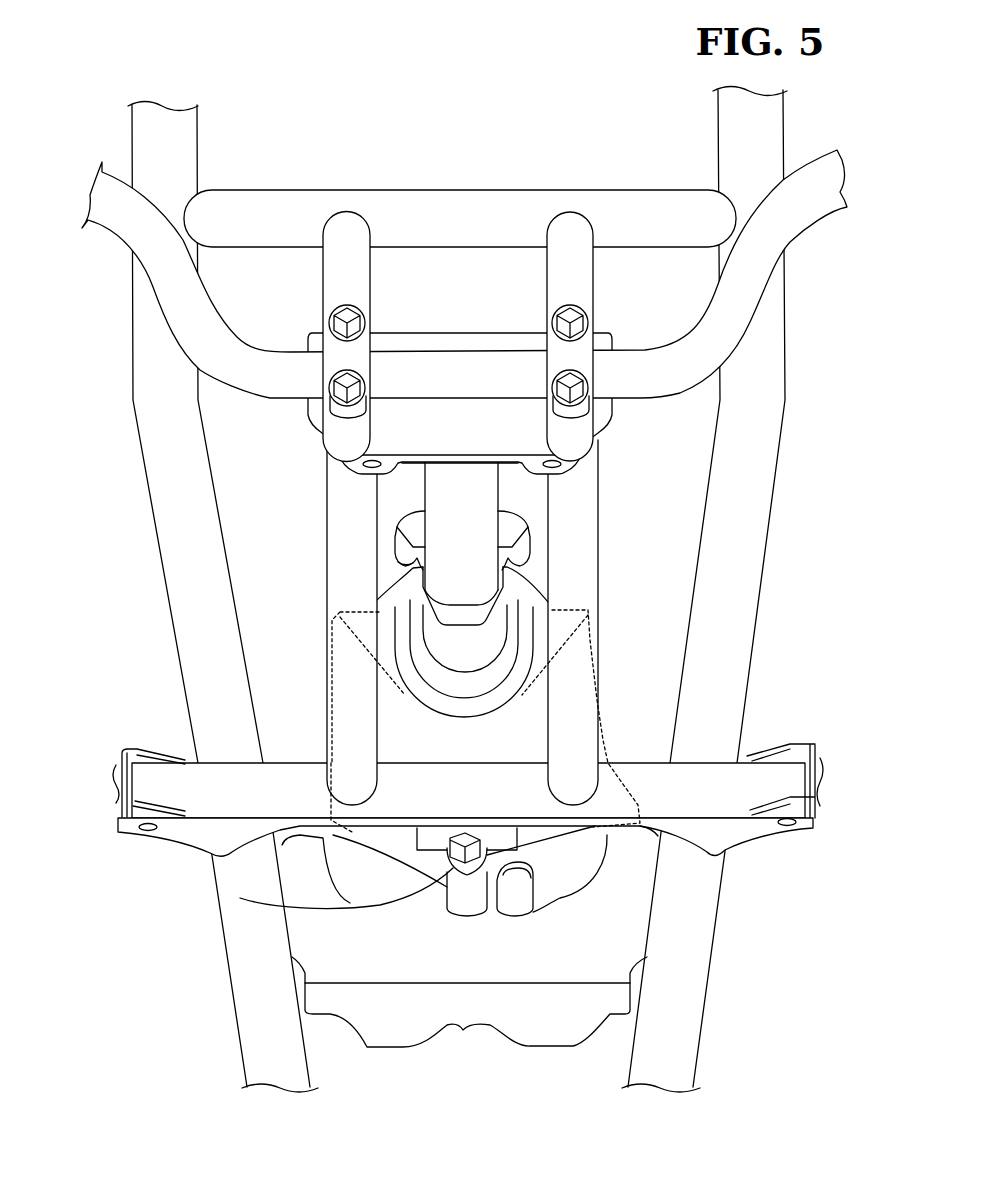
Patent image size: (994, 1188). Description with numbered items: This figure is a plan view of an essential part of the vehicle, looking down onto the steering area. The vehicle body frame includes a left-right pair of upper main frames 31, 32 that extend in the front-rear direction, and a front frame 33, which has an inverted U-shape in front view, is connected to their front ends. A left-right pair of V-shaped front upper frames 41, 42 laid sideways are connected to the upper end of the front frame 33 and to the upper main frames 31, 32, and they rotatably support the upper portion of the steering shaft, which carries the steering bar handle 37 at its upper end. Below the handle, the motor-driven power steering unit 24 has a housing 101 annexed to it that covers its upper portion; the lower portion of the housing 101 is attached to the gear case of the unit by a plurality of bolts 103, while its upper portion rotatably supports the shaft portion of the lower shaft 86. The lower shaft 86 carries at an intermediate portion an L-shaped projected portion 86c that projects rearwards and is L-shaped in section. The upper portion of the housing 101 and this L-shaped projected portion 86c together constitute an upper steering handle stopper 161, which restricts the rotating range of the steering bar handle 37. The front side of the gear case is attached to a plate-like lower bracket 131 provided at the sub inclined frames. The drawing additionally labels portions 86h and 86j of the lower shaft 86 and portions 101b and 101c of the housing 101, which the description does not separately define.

The motor-driven power steering unit 24 is at (533, 915).
The upper main frame 31 is at (772, 385).
The upper main frame 32 is at (162, 455).
The front frame 33 is at (247, 1022).
The steering bar handle 37 is at (455, 367).
The front upper frame 41 is at (465, 405).
The front upper frame 42 is at (332, 472).
The lower shaft 86 is at (466, 551).
The L-shaped projected portion 86c is at (396, 543).
The collar right ear 86h is at (522, 543).
The collar lower projection 86j is at (403, 562).
The housing 101 is at (464, 648).
The bracket right portion 101b is at (601, 717).
The bracket left portion 101c is at (340, 638).
The bolt 103 is at (447, 870).
The lower bracket 131 is at (463, 1018).
The upper steering handle stopper 161 is at (531, 575).